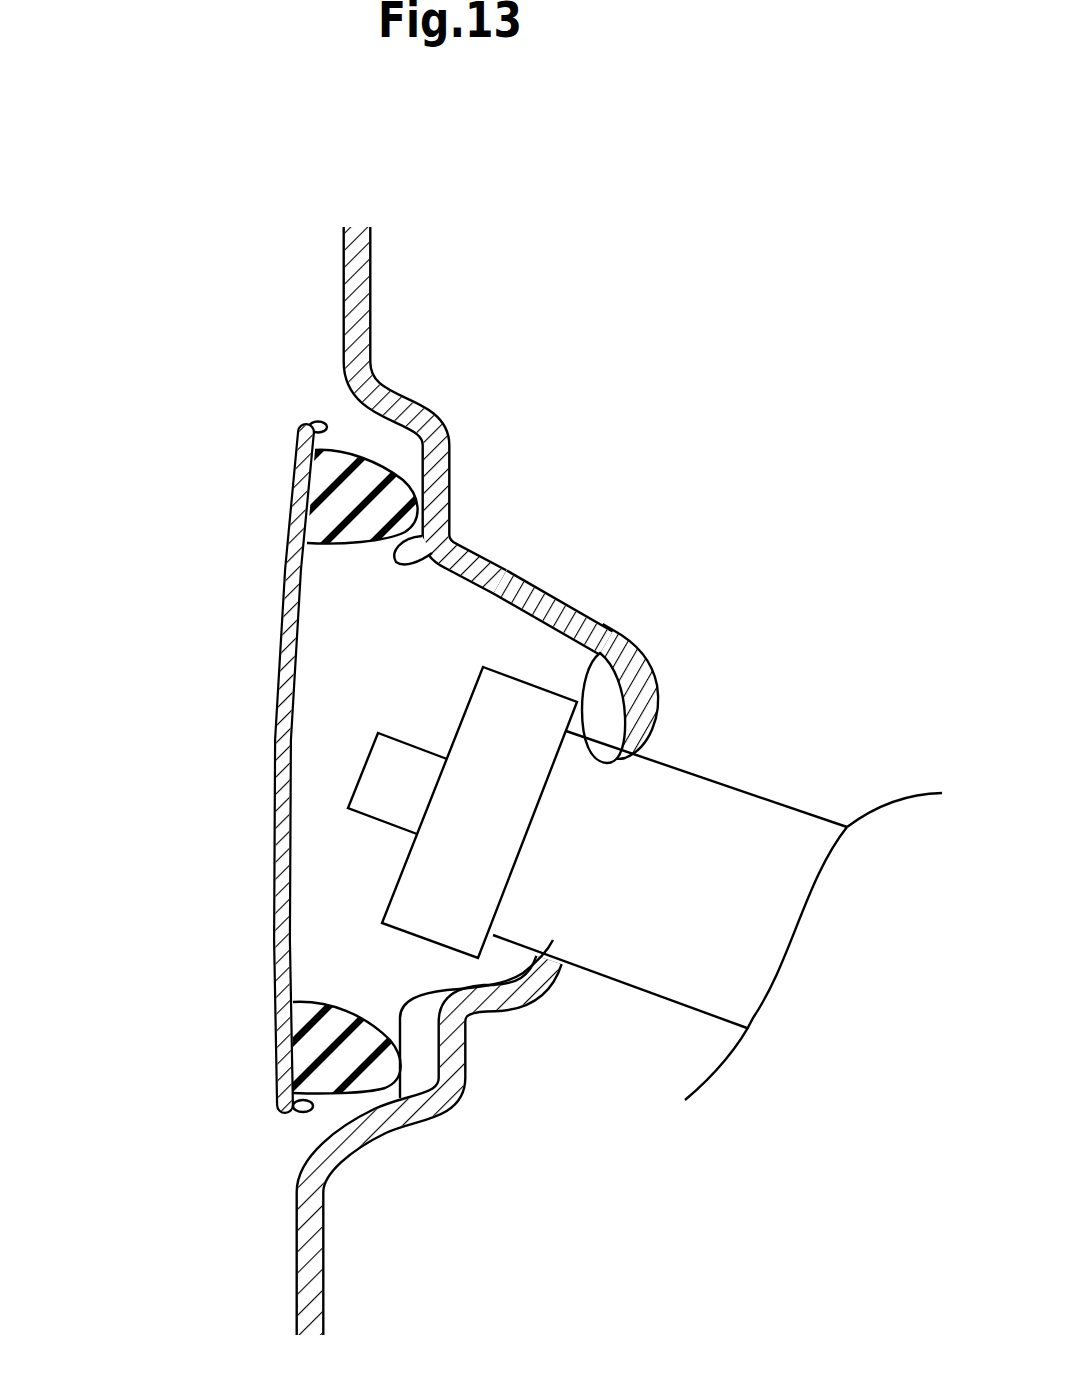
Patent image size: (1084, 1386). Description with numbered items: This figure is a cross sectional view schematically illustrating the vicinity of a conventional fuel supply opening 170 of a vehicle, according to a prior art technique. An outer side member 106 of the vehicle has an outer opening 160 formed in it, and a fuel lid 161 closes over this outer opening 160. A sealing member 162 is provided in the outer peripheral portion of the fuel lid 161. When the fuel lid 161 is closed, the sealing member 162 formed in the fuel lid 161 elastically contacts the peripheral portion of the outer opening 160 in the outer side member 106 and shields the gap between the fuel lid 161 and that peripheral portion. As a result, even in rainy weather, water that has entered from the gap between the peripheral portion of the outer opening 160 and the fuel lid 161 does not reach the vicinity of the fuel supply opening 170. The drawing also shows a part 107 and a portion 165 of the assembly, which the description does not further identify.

The outer side member 106 is at (343, 295).
The shaft 107 is at (710, 773).
The outer opening 160 is at (450, 505).
The fuel lid 161 is at (272, 707).
The sealing member 162 is at (293, 487).
The flange portion 165 is at (618, 632).
The fuel supply opening 170 is at (493, 934).